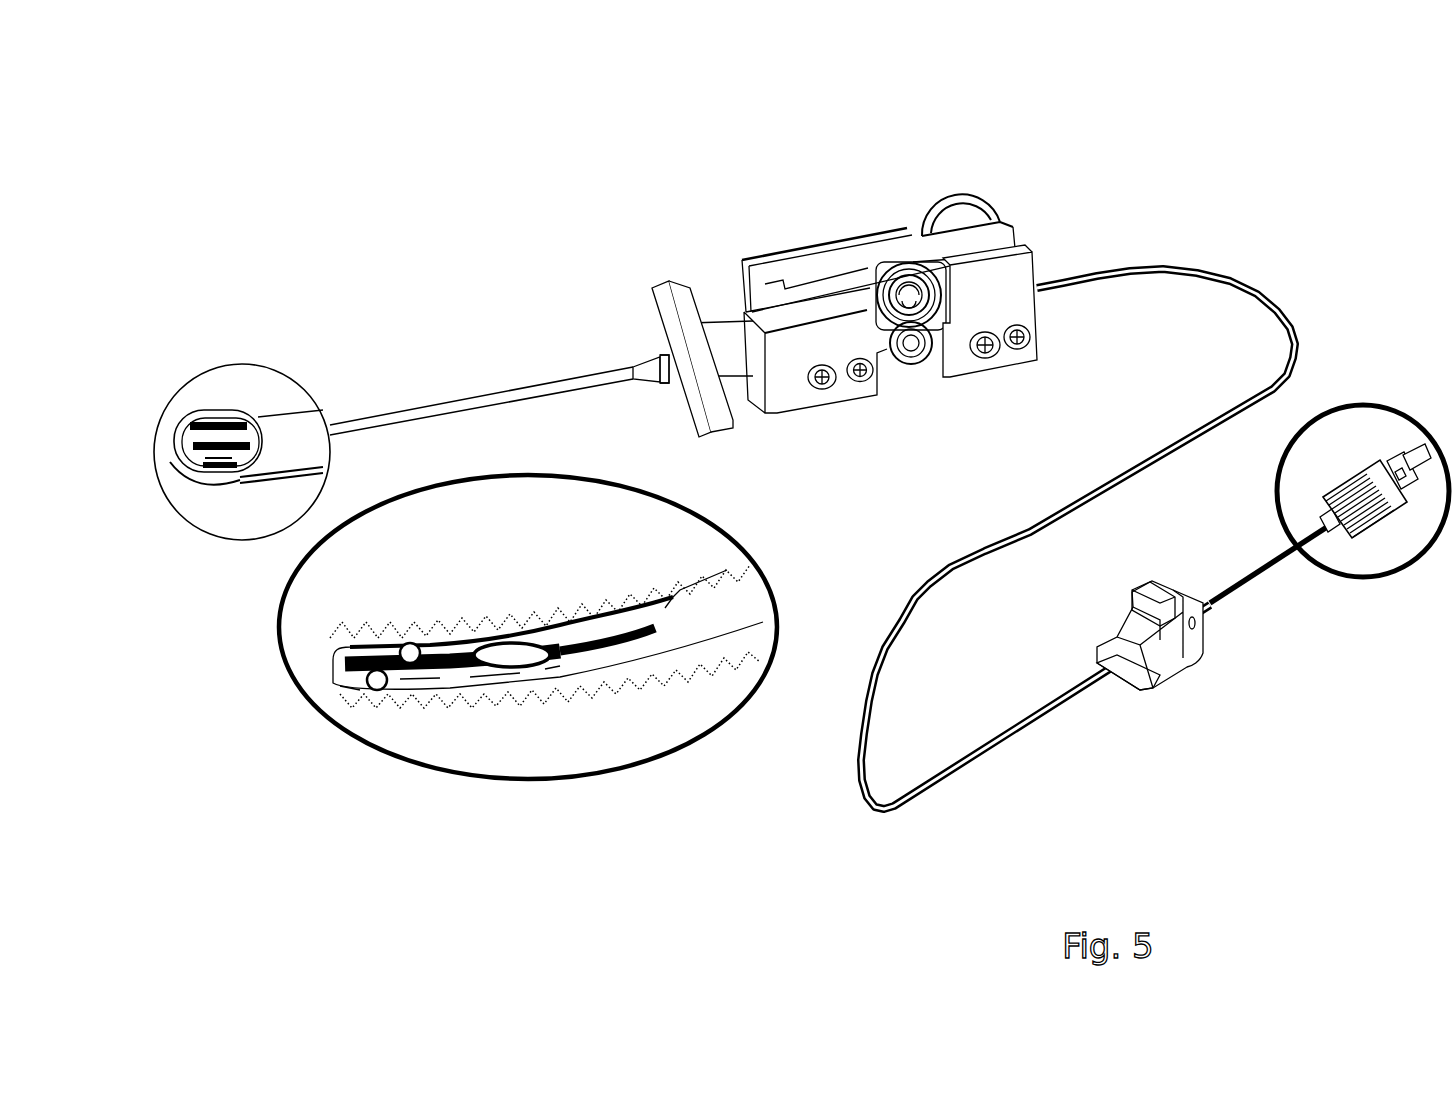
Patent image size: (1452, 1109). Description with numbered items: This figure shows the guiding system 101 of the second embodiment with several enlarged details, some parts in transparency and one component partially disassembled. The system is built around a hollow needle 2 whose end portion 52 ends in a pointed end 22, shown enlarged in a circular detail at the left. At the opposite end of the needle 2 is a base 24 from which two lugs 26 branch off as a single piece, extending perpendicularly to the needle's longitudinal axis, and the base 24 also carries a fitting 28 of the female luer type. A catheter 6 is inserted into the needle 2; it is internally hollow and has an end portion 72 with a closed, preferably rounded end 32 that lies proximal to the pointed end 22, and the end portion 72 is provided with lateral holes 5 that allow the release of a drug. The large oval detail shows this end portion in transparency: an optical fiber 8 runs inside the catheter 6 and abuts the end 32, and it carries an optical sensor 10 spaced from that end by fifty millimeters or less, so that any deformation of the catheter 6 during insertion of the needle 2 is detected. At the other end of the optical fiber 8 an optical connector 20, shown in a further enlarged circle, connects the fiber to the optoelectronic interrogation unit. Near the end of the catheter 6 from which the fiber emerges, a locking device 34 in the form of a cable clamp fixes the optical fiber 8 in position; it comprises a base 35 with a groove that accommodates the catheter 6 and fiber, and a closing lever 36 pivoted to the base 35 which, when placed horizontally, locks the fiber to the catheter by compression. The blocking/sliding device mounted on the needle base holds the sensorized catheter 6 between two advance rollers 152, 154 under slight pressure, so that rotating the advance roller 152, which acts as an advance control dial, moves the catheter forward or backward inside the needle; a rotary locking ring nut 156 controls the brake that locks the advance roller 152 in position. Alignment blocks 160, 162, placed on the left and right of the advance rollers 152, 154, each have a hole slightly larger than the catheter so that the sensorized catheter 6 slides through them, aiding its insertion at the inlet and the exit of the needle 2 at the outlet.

The needle 2 is at (293, 437).
The lateral holes 5 is at (411, 643).
The catheter 6 is at (1205, 272).
The optical fiber 8 is at (587, 643).
The optical sensor 10 is at (517, 656).
The optical connector 20 is at (1380, 535).
The pointed end 22 is at (165, 450).
The base 24 is at (655, 345).
The lugs 26 is at (673, 300).
The fitting 28 is at (730, 347).
The end 32 is at (182, 428).
The locking device 34 is at (1188, 697).
The base 35 is at (1140, 675).
The closing lever 36 is at (1132, 600).
The end portion 52 is at (233, 478).
The end portion 72 is at (350, 694).
The guiding system 101 is at (1067, 173).
The advance roller 152 is at (907, 263).
The advance roller 154 is at (908, 366).
The locking ring nut 156 is at (958, 205).
The alignment block 160 is at (1000, 298).
The alignment block 162 is at (790, 353).